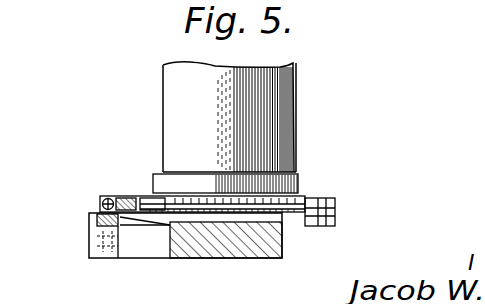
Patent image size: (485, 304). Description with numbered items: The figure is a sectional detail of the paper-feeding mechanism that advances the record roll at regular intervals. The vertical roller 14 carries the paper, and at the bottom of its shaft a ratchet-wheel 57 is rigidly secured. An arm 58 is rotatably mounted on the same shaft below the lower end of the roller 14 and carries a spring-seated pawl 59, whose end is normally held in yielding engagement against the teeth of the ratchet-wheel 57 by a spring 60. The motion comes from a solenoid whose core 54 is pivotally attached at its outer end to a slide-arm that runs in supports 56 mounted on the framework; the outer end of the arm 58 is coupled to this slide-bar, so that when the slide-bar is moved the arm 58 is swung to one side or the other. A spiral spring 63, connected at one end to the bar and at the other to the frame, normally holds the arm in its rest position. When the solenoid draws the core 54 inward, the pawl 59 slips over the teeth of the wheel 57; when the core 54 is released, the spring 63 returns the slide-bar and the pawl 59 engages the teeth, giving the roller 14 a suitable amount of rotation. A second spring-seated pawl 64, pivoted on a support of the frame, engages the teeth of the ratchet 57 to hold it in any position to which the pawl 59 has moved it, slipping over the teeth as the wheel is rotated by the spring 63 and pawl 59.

The vertical roller 14 is at (287, 124).
The core 54 is at (117, 252).
The support 56 is at (153, 247).
The ratchet-wheel 57 is at (293, 200).
The arm 58 is at (192, 232).
The spring-seated pawl 59 is at (174, 190).
The spring 60 is at (132, 186).
The spiral spring 63 is at (103, 203).
The spring-seated pawl 64 is at (318, 204).